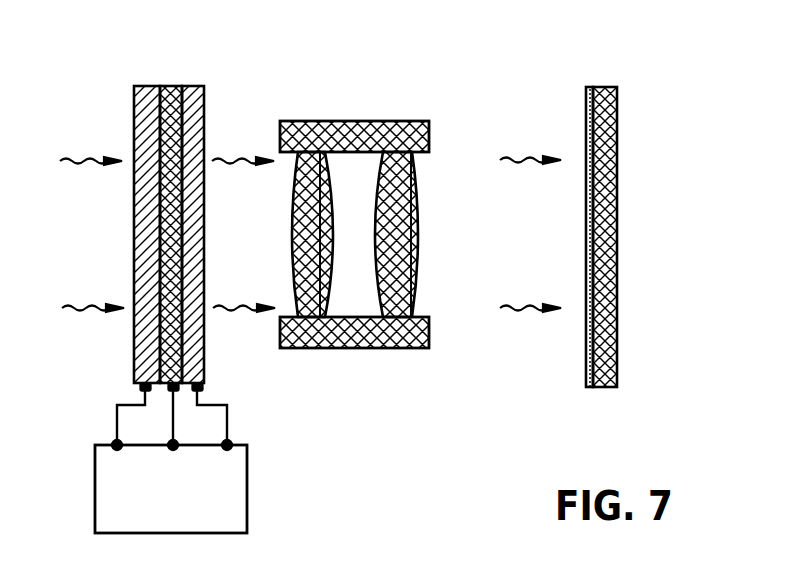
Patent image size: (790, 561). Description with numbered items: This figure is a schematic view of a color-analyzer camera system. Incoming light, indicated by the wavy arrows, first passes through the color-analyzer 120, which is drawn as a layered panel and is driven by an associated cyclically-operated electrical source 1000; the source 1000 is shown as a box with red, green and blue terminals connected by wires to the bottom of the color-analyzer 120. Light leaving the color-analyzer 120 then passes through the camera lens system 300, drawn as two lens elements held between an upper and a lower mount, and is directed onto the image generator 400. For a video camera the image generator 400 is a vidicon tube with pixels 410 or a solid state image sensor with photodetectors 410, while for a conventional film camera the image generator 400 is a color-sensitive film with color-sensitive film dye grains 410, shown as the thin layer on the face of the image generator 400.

The color-analyzer 120 is at (165, 82).
The camera lens system 300 is at (366, 88).
The image generator 400 is at (576, 228).
The pixels / photodetectors / film dye grains 410 is at (586, 360).
The cyclically-operated electrical source 1000 is at (248, 463).